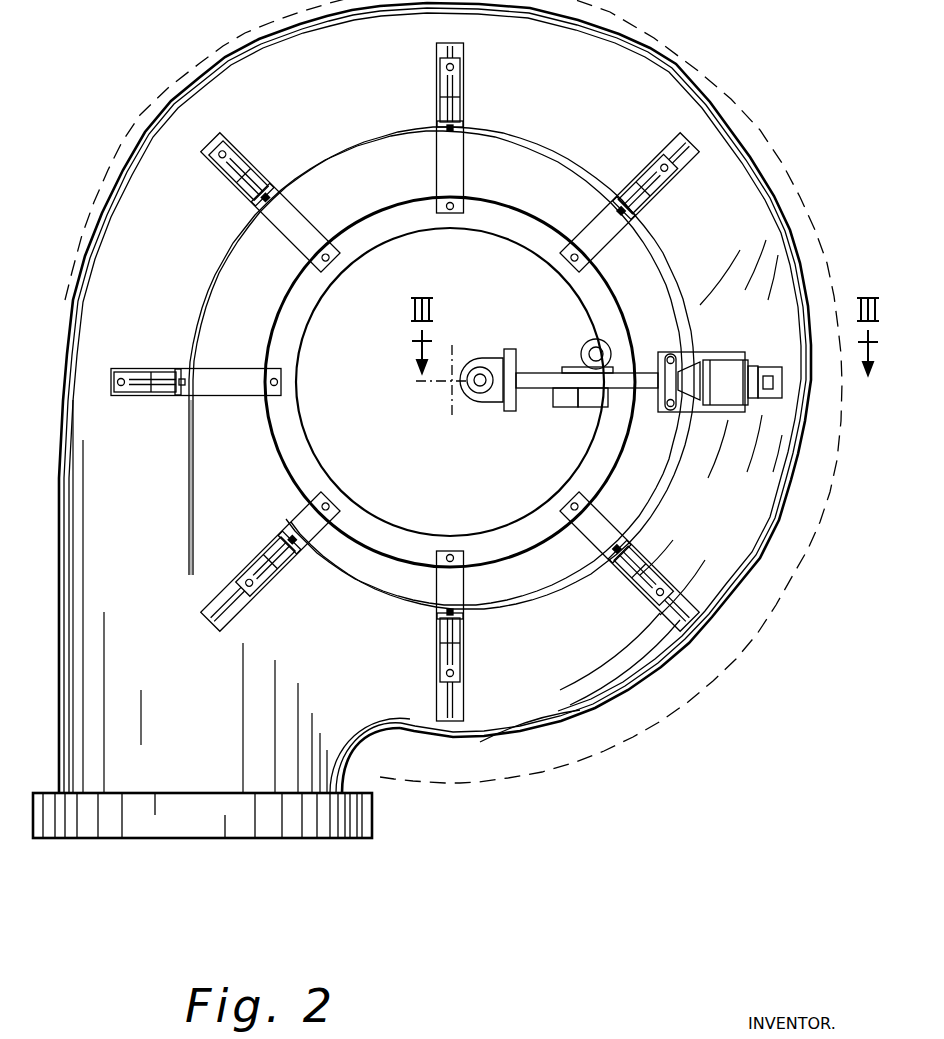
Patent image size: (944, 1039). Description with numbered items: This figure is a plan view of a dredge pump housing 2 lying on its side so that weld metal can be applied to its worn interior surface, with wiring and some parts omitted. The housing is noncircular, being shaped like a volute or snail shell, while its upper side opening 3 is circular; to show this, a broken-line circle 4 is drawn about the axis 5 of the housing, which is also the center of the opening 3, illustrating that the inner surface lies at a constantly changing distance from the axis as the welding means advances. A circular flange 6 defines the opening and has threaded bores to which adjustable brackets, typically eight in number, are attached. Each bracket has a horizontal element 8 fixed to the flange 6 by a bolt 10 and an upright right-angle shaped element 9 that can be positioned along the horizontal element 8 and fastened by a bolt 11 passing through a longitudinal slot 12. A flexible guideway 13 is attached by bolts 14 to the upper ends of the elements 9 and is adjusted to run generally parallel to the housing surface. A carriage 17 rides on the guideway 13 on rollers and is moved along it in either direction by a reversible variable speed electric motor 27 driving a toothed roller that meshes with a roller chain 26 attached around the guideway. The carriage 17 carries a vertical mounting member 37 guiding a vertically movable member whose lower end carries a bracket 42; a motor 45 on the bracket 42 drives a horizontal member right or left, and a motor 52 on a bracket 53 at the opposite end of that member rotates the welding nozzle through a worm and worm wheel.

The dredge pump housing 2 is at (500, 733).
The upper side opening 3 is at (316, 455).
The circle 4 is at (737, 106).
The axis of the housing 5 is at (448, 384).
The circular flange 6 is at (300, 322).
The horizontal element 8 is at (463, 46).
The upright element 9 is at (440, 111).
The bolt 10 is at (445, 200).
The bolt 11 is at (452, 62).
The longitudinal slot 12 is at (446, 50).
The flexible guideway 13 is at (193, 512).
The bolt 14 is at (457, 135).
The carriage 17 is at (726, 352).
The roller chain 26 is at (188, 465).
The reversible variable speed electric motor 27 is at (752, 360).
The vertical mounting member 37 is at (566, 408).
The bracket 42 is at (595, 408).
The reversible variable speed electric motor 45 is at (585, 350).
The reversible electric motor 52 is at (484, 366).
The bracket 53 is at (495, 403).